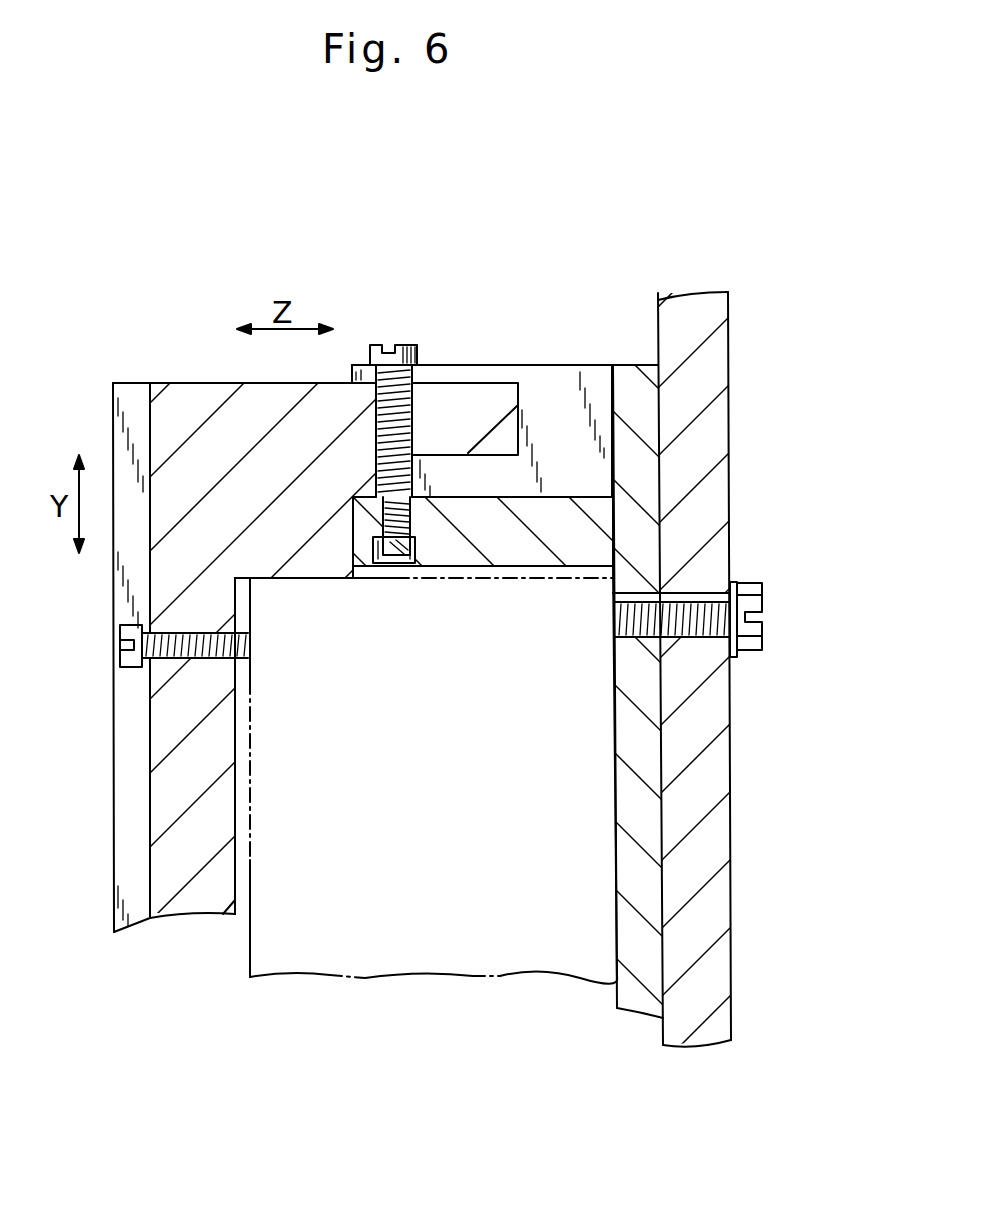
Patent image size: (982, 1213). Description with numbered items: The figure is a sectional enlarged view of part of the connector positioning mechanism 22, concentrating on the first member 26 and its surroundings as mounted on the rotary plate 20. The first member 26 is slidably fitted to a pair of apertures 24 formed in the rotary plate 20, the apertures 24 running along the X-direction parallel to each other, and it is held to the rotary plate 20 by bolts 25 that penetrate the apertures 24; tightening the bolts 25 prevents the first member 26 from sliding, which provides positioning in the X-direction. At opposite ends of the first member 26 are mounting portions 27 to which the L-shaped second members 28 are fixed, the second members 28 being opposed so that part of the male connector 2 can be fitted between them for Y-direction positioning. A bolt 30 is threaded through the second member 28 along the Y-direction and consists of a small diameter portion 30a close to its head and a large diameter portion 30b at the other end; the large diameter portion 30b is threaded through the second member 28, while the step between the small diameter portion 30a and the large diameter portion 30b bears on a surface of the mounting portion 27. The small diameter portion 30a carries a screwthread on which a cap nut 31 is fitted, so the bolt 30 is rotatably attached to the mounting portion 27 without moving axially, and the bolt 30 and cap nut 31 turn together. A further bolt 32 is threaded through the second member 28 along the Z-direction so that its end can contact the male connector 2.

The male connector 2 is at (420, 960).
The rotary plate 20 is at (712, 448).
The connector positioning mechanism 22 is at (458, 328).
The apertures 24 is at (702, 637).
The bolts 25 is at (752, 600).
The first member 26 is at (632, 737).
The mounting portions 27 is at (502, 550).
The second members 28 is at (195, 402).
The bolt 30 is at (480, 446).
The small diameter portion 30a is at (412, 513).
The large diameter portion 30b is at (415, 443).
The cap nut 31 is at (402, 562).
The bolt 32 is at (125, 670).